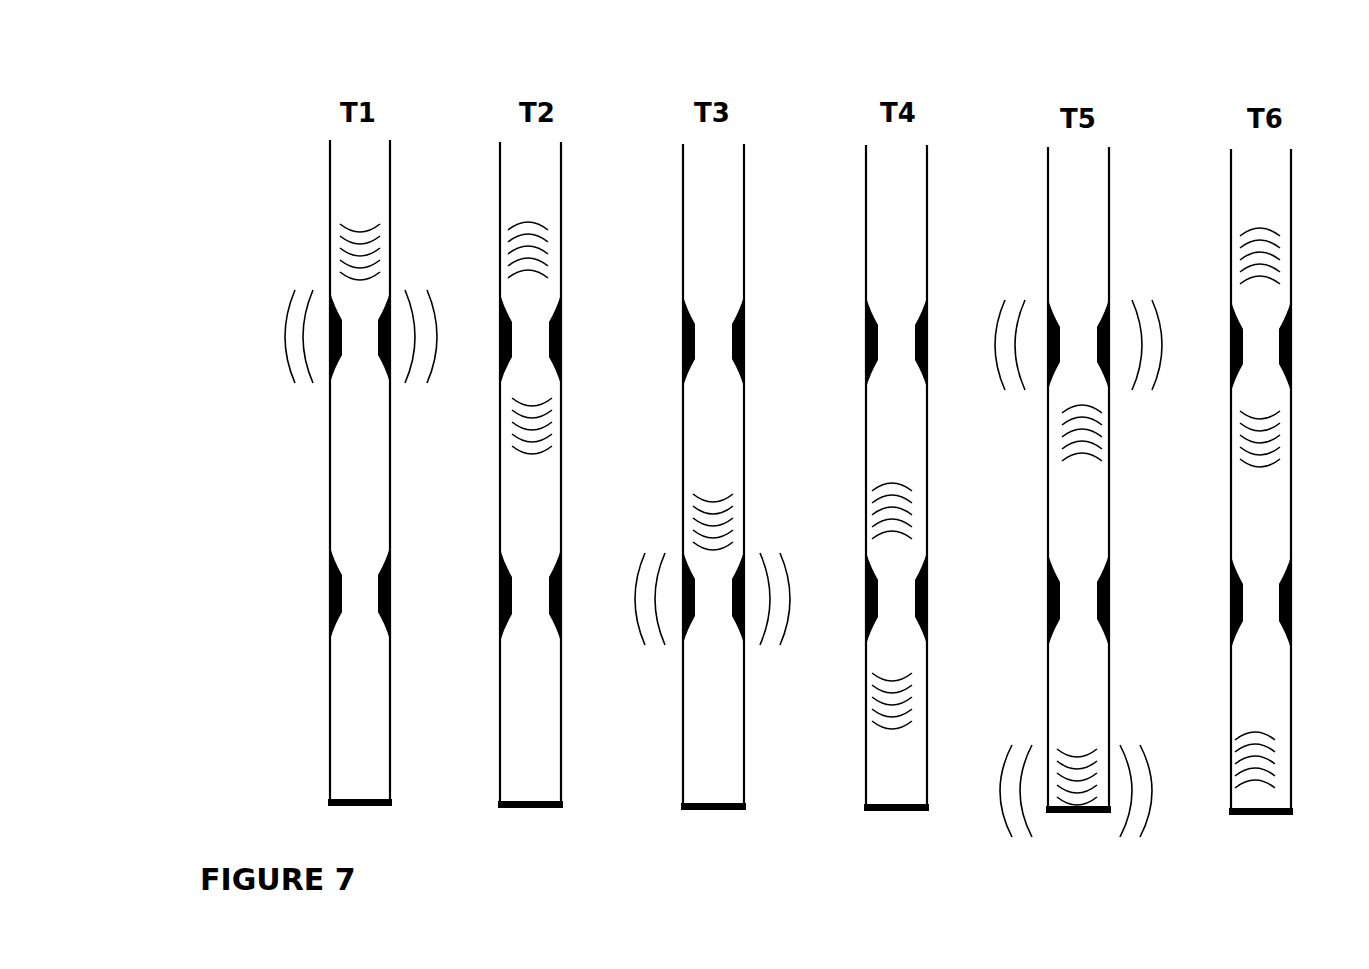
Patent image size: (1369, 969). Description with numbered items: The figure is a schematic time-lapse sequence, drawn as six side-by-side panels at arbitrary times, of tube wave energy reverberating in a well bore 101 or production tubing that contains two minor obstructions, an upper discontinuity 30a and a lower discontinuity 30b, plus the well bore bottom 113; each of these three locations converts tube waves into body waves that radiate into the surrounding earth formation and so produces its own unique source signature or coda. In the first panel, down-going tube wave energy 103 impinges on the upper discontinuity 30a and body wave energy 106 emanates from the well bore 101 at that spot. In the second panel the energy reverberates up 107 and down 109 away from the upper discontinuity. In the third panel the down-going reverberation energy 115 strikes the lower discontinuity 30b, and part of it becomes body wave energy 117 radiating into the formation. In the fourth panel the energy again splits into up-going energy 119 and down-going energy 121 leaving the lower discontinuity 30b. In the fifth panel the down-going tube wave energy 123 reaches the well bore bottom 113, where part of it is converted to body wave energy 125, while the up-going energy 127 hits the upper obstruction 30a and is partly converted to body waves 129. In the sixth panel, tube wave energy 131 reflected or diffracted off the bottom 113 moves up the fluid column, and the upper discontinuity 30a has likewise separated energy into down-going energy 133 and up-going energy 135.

The well bore 101 is at (390, 150).
The tube wave energy 103 is at (345, 237).
The body wave energy 106 is at (283, 345).
The up going tube wave energy 107 is at (522, 220).
The down going tube wave energy 109 is at (548, 410).
The well bore bottom 113 is at (496, 799).
The down going tube wave reverberation energy 115 is at (693, 515).
The body wave energy 117 is at (764, 609).
The up going tube wave energy 119 is at (884, 496).
The down going tube wave energy 121 is at (883, 706).
The down going tube wave energy 123 is at (1087, 757).
The body wave energy 125 is at (1128, 801).
The up going energy 127 is at (1073, 424).
The body waves 129 is at (1133, 338).
The tube wave energy 131 is at (1267, 740).
The down going energy 133 is at (1266, 448).
The up going energy 135 is at (1270, 250).
The upper discontinuity 30a is at (340, 369).
The lower discontinuity 30b is at (500, 600).